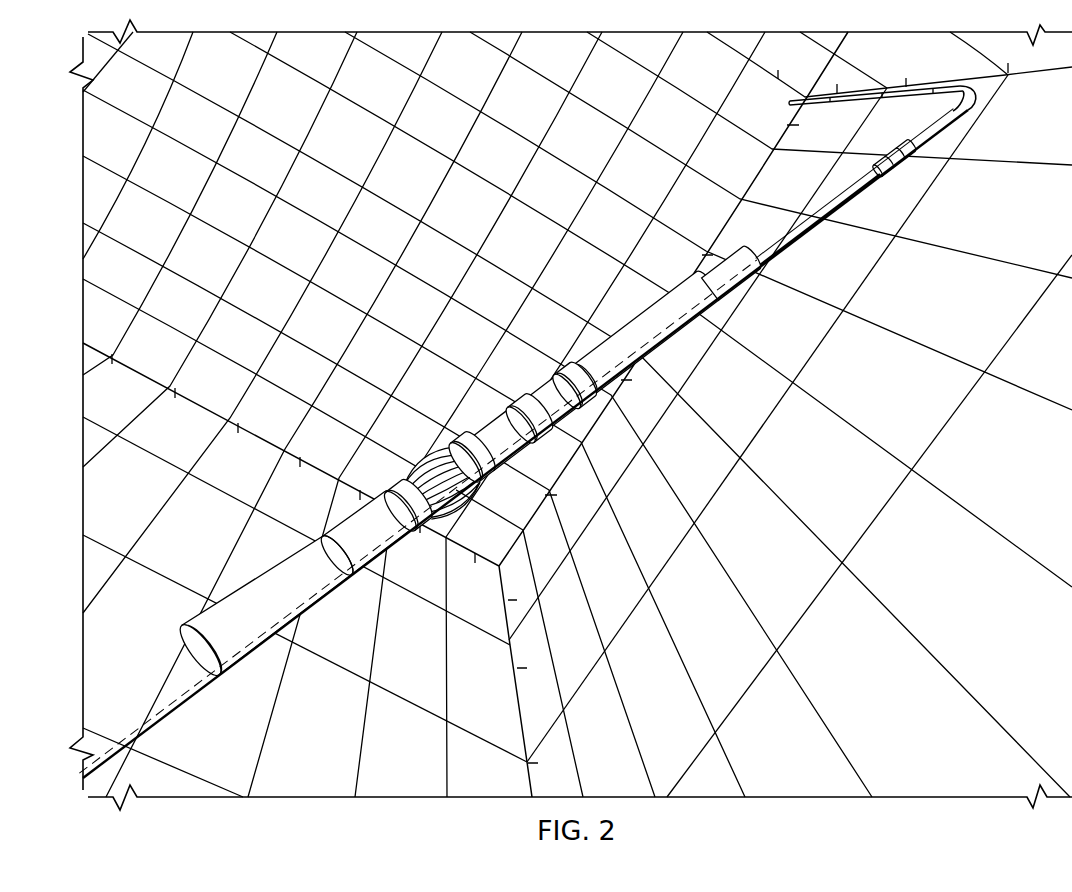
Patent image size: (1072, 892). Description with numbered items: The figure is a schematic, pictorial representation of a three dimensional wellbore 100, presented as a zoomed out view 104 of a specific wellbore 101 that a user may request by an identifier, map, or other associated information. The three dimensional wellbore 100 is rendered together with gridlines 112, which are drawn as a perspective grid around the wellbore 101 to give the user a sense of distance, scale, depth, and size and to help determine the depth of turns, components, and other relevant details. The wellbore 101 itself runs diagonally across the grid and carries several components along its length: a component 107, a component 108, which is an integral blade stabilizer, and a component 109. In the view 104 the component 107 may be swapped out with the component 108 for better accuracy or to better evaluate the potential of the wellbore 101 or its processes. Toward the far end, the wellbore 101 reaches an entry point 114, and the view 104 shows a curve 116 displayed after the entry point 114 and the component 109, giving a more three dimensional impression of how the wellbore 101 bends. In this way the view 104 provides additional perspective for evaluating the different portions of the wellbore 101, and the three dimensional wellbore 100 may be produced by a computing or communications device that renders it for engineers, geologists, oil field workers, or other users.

The three dimensional wellbore 100 is at (215, 126).
The wellbore 101 is at (684, 333).
The view 104 is at (369, 345).
The component 107 is at (808, 236).
The component 108 is at (374, 566).
The component 109 is at (900, 168).
The gridlines 112 is at (766, 423).
The entry point 114 is at (787, 103).
The curve 116 is at (980, 100).